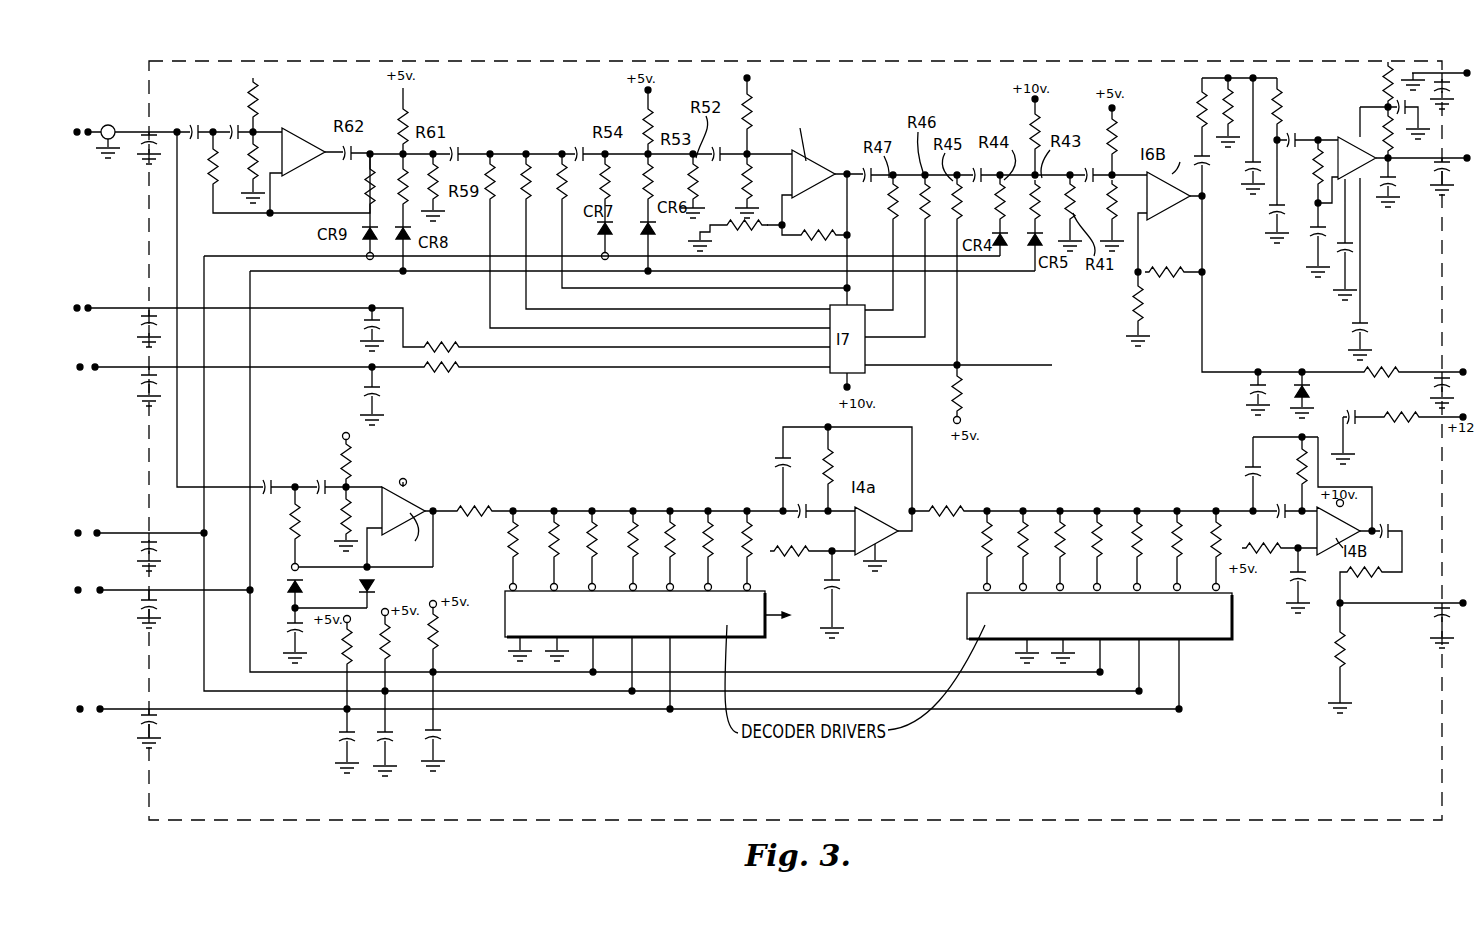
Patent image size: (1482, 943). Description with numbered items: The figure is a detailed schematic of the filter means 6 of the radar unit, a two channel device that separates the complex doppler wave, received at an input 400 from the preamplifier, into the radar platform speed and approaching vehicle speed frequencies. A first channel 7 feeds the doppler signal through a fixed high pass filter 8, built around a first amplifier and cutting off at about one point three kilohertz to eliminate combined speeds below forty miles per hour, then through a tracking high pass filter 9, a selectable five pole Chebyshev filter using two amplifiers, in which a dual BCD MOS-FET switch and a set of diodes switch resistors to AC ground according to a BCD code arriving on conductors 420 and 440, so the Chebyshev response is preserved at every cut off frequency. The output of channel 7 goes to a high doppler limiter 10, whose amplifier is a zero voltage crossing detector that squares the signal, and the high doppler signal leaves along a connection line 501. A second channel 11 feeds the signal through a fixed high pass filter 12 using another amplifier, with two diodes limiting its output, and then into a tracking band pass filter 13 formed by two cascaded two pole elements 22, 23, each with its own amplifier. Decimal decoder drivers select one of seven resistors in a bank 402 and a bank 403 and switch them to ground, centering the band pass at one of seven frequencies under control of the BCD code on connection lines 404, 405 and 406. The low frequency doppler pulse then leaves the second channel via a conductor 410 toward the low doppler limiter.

The filter means 6 is at (796, 50).
The first channel 7 is at (273, 141).
The fixed high pass filter 8 is at (269, 127).
The tracking high pass filter 9 is at (826, 154).
The high doppler limiter 10 is at (1322, 85).
The second channel 11 is at (238, 483).
The fixed high pass filter 12 is at (435, 487).
The tracking band pass filter 13 is at (588, 496).
The tracking band pass filter element 22 is at (768, 641).
The tracking band pass filter element 23 is at (963, 639).
The input 400 is at (139, 126).
The resistor bank 402 is at (630, 529).
The resistor bank 403 is at (1048, 511).
The connection line 404 is at (119, 531).
The connection line 405 is at (114, 573).
The connection line 406 is at (121, 690).
The conductor 410 is at (1463, 603).
The conductor 420 is at (133, 292).
The conductor 440 is at (130, 350).
The connection line 501 is at (1460, 157).